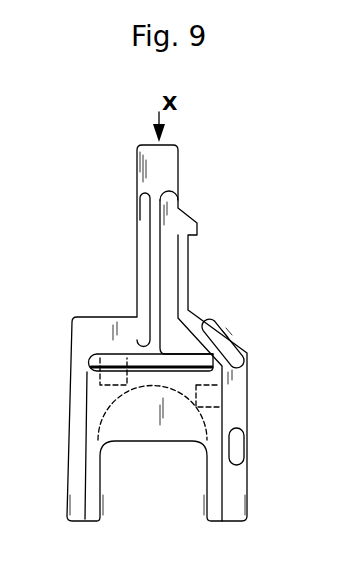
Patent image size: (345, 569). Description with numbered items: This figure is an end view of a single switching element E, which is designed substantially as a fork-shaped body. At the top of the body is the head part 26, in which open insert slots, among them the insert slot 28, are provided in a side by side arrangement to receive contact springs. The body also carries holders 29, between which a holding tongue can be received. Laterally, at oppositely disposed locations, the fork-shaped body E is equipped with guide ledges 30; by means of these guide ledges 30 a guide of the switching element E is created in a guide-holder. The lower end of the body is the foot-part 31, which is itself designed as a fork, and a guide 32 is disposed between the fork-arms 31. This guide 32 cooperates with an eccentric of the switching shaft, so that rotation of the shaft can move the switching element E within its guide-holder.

The switching element E is at (85, 315).
The head part 26 is at (176, 153).
The insert slot 28 is at (158, 223).
The holders 29 is at (228, 342).
The guide ledges 30 is at (88, 368).
The foot-part 31 is at (74, 497).
The guide 32 is at (101, 498).